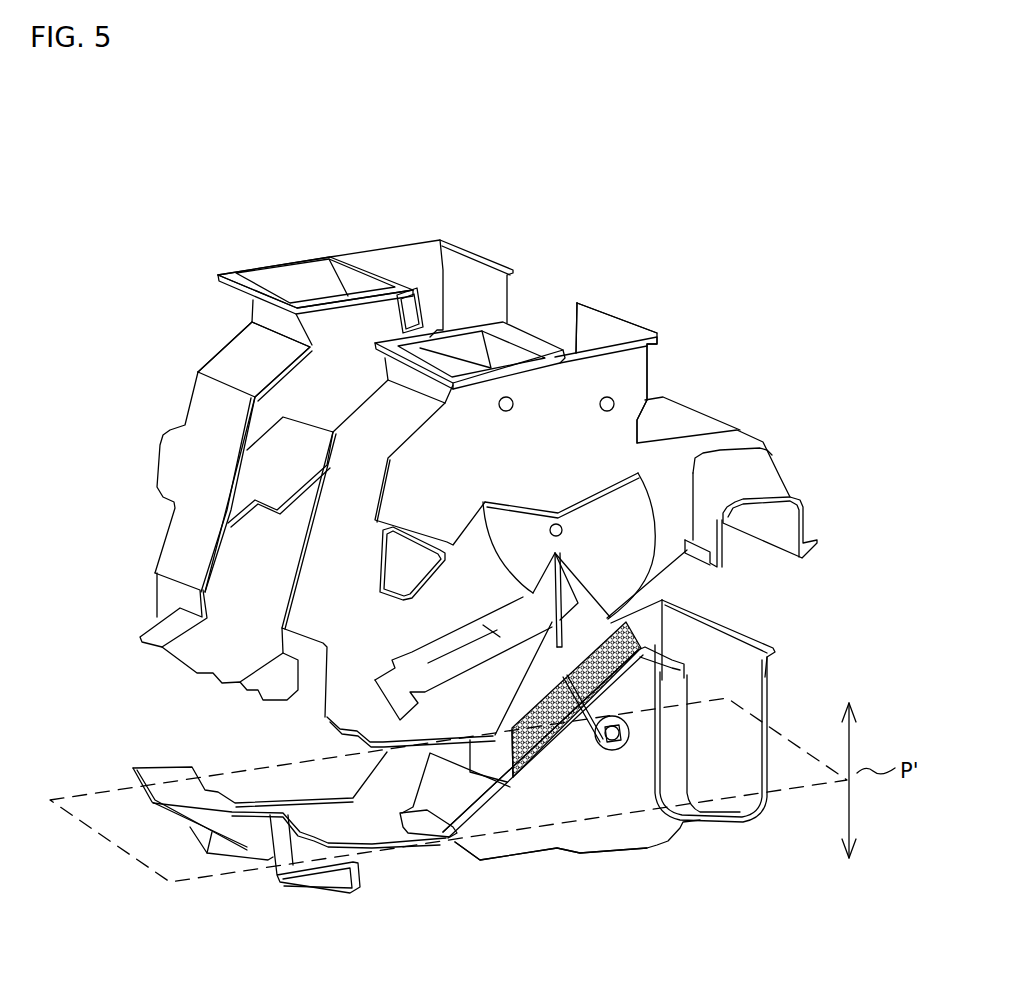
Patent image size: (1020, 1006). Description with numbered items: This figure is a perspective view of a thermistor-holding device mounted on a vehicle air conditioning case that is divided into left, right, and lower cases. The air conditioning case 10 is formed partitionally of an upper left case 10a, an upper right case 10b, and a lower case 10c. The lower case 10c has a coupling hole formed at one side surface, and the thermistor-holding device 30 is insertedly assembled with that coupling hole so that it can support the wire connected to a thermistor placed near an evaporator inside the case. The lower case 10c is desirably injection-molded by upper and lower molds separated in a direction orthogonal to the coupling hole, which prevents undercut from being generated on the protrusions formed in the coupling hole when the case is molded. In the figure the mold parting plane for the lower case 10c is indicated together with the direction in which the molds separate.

The air conditioning case 10 is at (573, 207).
The upper left case 10a is at (245, 362).
The upper right case 10b is at (575, 400).
The lower case 10c is at (540, 802).
The thermistor-holding device 30 is at (613, 763).